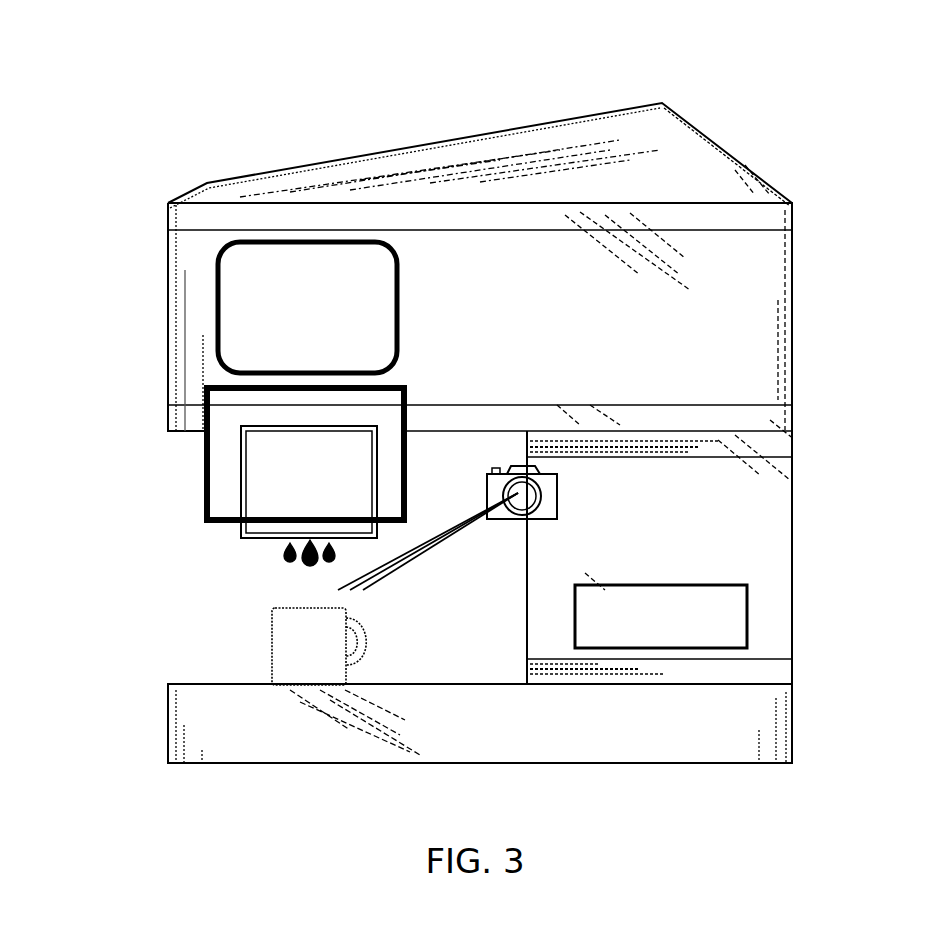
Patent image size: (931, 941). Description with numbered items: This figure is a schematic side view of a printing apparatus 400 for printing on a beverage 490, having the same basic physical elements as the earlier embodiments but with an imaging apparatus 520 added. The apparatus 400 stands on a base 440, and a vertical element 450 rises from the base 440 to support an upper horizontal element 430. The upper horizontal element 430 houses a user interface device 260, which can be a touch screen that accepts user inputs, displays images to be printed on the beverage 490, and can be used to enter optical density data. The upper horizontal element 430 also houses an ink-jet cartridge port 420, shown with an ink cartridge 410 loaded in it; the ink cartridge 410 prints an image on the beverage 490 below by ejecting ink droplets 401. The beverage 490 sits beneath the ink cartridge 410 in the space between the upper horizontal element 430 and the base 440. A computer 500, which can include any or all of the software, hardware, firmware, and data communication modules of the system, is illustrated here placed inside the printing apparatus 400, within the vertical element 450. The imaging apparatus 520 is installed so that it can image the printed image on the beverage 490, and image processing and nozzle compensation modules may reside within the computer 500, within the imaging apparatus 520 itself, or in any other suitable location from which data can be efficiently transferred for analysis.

The apparatus 400 is at (136, 80).
The upper horizontal element 430 is at (180, 332).
The user interface device 260 is at (286, 305).
The ink-jet cartridge port 420 is at (228, 453).
The ink cartridge 410 is at (280, 496).
The ink droplets 401 is at (278, 553).
The imaging apparatus 520 is at (508, 521).
The vertical element 450 is at (640, 553).
The computer 500 is at (639, 632).
The beverage 490 is at (289, 657).
The base 440 is at (604, 738).